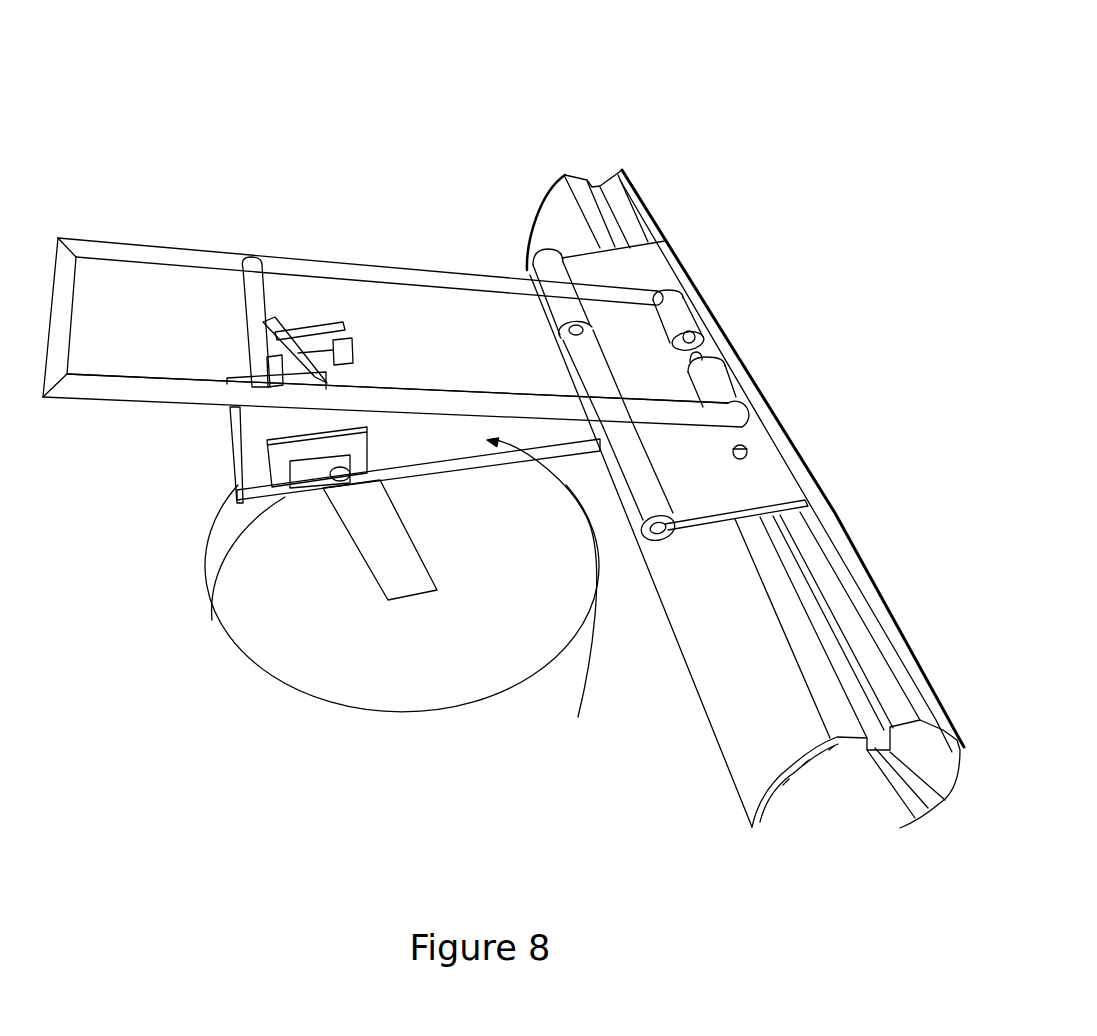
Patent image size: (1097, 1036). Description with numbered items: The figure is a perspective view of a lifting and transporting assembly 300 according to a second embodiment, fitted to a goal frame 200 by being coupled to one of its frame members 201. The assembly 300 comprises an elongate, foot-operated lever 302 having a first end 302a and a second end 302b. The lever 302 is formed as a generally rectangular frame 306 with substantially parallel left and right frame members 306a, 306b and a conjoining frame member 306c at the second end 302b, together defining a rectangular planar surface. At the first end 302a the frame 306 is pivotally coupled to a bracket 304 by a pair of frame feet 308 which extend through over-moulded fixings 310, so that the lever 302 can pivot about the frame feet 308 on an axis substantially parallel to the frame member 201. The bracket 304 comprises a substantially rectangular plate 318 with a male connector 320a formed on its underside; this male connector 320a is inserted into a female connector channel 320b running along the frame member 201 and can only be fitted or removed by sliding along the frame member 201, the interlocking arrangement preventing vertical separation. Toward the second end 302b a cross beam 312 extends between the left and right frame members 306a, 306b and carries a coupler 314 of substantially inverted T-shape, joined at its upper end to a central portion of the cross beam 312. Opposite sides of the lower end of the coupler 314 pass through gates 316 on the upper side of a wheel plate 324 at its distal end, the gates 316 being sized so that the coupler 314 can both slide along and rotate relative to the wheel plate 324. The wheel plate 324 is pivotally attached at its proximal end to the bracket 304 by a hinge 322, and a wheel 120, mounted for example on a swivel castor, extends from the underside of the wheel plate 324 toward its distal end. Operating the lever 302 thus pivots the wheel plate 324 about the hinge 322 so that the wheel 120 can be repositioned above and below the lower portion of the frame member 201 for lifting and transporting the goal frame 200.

The wheel 120 is at (302, 685).
The goal frame 200 is at (620, 137).
The frame member 201 is at (655, 202).
The assembly 300 is at (768, 466).
The elongate lever 302 is at (469, 270).
The first end 302a is at (660, 292).
The second end 302b is at (87, 240).
The bracket 304 is at (760, 435).
The rectangular frame 306 is at (118, 398).
The left frame member 306a is at (192, 398).
The right frame member 306b is at (222, 262).
The conjoining frame member 306c is at (76, 302).
The frame feet 308 is at (758, 392).
The over-moulded fixings 310 is at (727, 377).
The cross beam 312 is at (250, 310).
The coupler 314 is at (300, 372).
The gates 316 is at (318, 338).
The rectangular plate 318 is at (702, 500).
The male connector 320a is at (800, 515).
The female connector channel 320b is at (823, 583).
The hinge 322 is at (640, 517).
The wheel plate 324 is at (545, 595).